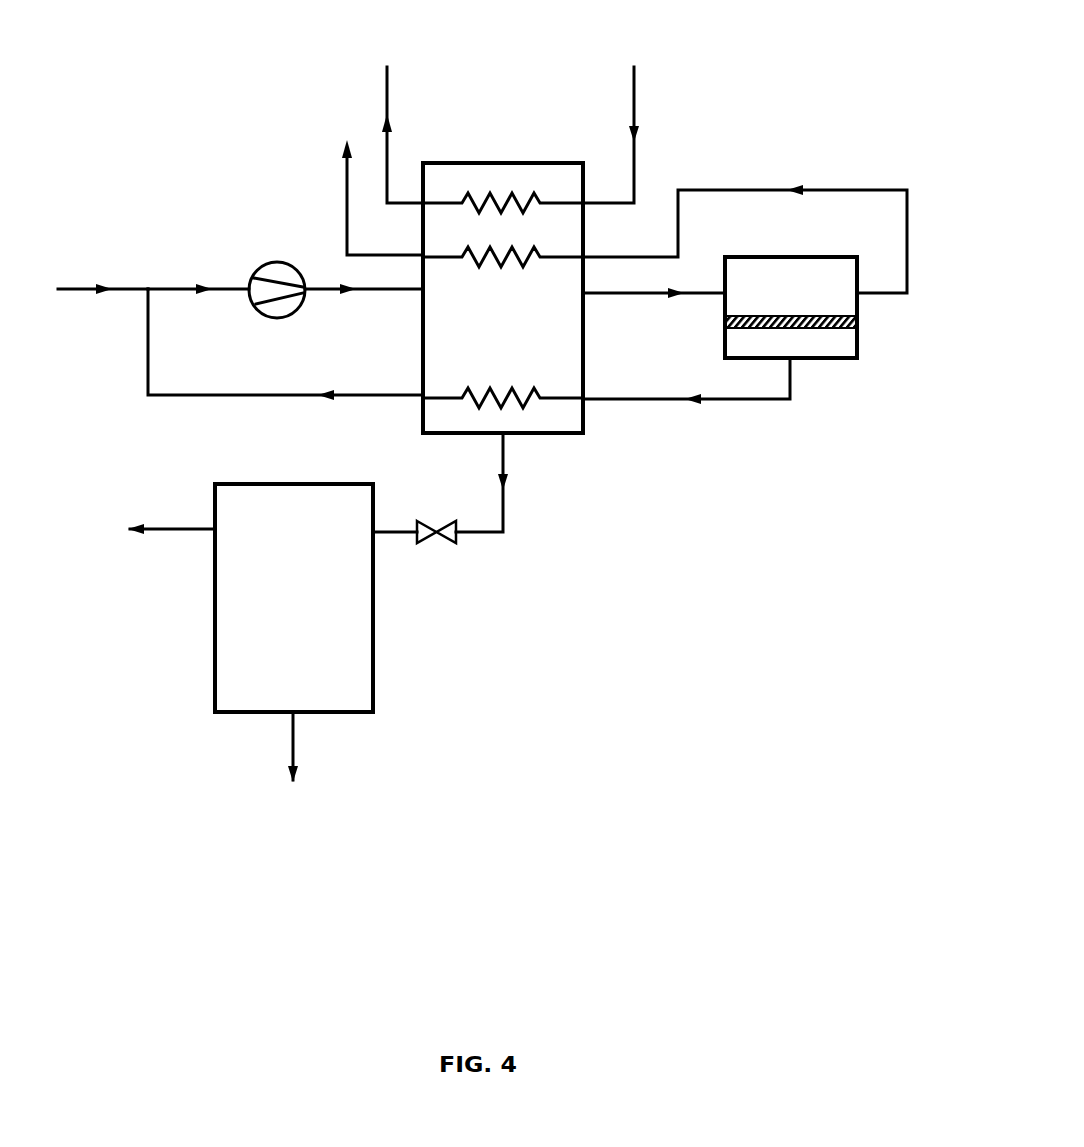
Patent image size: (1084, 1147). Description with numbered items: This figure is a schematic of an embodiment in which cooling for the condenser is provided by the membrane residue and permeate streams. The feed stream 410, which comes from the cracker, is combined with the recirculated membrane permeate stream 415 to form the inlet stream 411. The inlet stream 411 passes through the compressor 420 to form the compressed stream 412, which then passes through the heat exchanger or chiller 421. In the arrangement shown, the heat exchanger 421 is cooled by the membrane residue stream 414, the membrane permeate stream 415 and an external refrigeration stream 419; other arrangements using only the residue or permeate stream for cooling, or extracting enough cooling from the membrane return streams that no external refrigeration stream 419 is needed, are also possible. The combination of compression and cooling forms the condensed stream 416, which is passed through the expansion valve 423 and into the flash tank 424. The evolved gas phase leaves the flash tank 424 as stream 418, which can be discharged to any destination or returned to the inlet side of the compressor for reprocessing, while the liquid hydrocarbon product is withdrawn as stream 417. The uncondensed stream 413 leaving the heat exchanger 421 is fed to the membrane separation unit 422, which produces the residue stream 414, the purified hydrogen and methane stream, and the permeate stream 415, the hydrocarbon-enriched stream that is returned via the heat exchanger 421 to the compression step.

The feed stream 410 is at (103, 274).
The inlet stream 411 is at (198, 274).
The compressed stream 412 is at (364, 306).
The uncondensed stream 413 is at (654, 310).
The membrane residue stream 414 is at (745, 228).
The membrane permeate stream 415 is at (686, 396).
The condensed stream 416 is at (507, 482).
The liquid hydrocarbon product stream 417 is at (293, 762).
The evolved gas phase stream 418 is at (144, 530).
The external refrigeration stream 419 is at (634, 135).
The compressor 420 is at (290, 262).
The heat exchanger or chiller 421 is at (458, 163).
The membrane separation unit 422 is at (858, 340).
The expansion valve 423 is at (457, 540).
The flash tank 424 is at (213, 702).